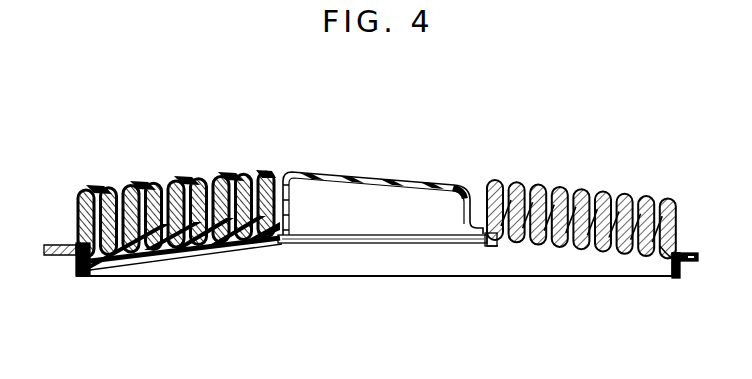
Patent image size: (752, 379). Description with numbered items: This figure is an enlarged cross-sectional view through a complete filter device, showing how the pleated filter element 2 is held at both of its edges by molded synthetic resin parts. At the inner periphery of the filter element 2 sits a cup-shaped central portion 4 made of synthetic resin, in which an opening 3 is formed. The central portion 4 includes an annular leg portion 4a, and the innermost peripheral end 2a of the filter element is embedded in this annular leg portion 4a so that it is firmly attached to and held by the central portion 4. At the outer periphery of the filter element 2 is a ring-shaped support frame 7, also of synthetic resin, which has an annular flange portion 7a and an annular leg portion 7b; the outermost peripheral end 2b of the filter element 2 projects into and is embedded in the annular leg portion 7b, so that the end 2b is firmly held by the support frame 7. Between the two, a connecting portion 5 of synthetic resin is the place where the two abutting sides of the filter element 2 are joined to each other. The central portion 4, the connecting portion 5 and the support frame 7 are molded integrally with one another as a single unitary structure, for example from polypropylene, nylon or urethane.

The filter element 2 is at (534, 180).
The innermost peripheral end 2a is at (497, 248).
The outermost peripheral end 2b is at (668, 257).
The opening 3 is at (343, 175).
The central portion 4 is at (403, 186).
The annular leg portion 4a is at (485, 246).
The connecting portion 5 is at (180, 187).
The support frame 7 is at (688, 262).
The annular flange portion 7a is at (680, 256).
The annular leg portion 7b is at (676, 270).